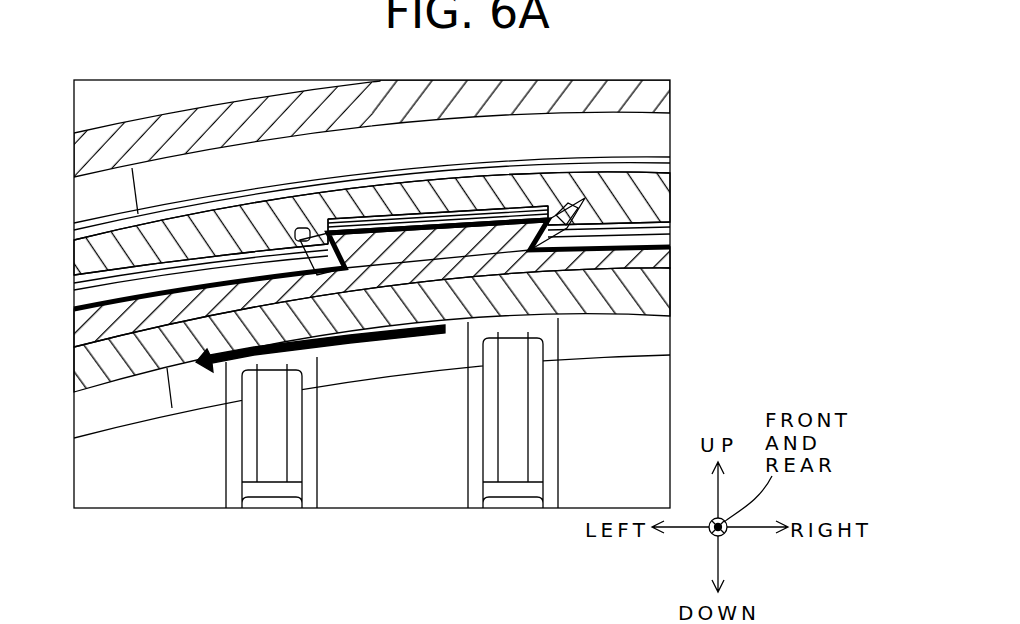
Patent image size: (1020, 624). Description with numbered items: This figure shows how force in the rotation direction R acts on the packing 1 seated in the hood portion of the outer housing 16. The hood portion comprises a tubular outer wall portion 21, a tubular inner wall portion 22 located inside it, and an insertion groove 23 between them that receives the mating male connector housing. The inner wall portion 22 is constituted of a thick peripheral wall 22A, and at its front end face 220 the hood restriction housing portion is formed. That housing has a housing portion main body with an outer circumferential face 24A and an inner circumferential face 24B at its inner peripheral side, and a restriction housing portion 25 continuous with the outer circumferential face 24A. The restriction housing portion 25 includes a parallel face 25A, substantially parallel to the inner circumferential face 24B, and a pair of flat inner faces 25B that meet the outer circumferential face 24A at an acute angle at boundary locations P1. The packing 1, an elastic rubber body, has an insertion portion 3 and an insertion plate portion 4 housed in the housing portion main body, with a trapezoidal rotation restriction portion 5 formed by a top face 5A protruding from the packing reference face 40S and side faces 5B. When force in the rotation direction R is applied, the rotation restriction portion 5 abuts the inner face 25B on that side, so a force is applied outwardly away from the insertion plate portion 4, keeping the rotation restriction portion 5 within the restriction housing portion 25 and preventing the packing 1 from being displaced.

The packing 1 is at (685, 274).
The insertion portion 3 is at (673, 263).
The insertion plate portion 4 is at (673, 250).
The rotation restriction portion 5 is at (400, 250).
The top face 5A is at (456, 260).
The side face 5B is at (330, 242).
The outer housing 16 is at (661, 80).
The outer wall portion 21 is at (660, 101).
The inner wall portion 22 is at (435, 195).
The peripheral wall 22A is at (672, 179).
The insertion groove 23 is at (660, 131).
The outer circumferential face 24A is at (672, 229).
The inner circumferential face 24B is at (673, 287).
The restriction housing portion 25 is at (505, 222).
The parallel face 25A is at (562, 215).
The inner face 25B is at (296, 232).
The packing reference face 40S is at (565, 275).
The front end face 220 is at (660, 198).
The boundary location P1 is at (497, 290).
The rotation direction R is at (338, 340).